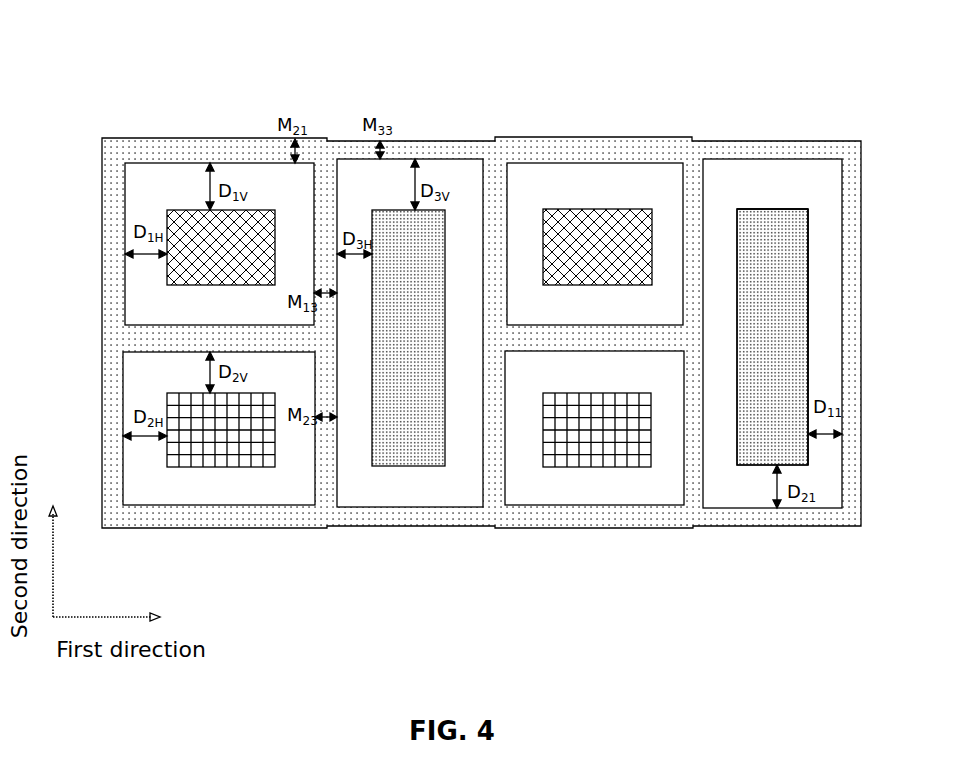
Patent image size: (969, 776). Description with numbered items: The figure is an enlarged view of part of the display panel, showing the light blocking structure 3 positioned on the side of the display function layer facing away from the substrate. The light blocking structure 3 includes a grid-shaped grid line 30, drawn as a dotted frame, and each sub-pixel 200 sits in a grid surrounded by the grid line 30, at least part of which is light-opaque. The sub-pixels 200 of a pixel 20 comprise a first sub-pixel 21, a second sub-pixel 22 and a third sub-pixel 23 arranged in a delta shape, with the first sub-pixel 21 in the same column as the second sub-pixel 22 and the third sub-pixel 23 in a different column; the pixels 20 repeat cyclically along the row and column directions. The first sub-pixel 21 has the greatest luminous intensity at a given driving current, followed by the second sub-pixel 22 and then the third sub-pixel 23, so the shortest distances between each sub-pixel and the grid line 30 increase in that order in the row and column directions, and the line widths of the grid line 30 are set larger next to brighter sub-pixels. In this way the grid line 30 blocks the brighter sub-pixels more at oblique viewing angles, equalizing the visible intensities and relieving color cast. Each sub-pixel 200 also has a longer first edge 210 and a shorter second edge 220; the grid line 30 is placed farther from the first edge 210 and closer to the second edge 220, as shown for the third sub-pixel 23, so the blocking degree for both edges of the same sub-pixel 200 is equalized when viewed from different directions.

The light blocking structure 3 is at (503, 136).
The grid line 30 is at (452, 147).
The pixel 20 is at (790, 80).
The first sub-pixel 21 is at (586, 220).
The second sub-pixel 22 is at (625, 398).
The third sub-pixel 23 is at (770, 215).
The sub-pixel 200 is at (797, 228).
The first edge 210 is at (808, 372).
The second edge 220 is at (803, 205).